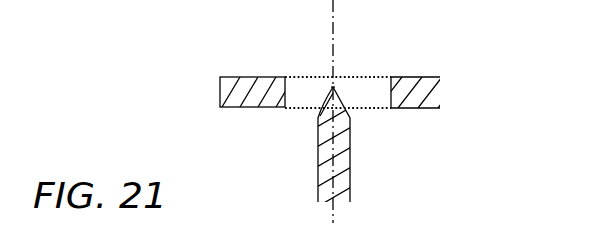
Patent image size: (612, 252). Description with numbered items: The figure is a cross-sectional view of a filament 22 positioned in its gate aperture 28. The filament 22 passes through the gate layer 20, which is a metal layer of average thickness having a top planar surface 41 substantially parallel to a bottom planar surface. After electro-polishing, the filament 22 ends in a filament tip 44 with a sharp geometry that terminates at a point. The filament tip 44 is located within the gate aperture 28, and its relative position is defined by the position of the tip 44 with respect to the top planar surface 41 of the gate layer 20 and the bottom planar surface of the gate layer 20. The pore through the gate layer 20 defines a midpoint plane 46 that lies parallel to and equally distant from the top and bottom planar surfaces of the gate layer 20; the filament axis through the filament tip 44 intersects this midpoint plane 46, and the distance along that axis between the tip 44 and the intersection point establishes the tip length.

The gate layer 20 is at (249, 76).
The top planar surface 41 is at (408, 76).
The filament 22 is at (350, 155).
The gate aperture 28 is at (322, 91).
The filament tip 44 is at (329, 110).
The midpoint plane 46 is at (333, 45).